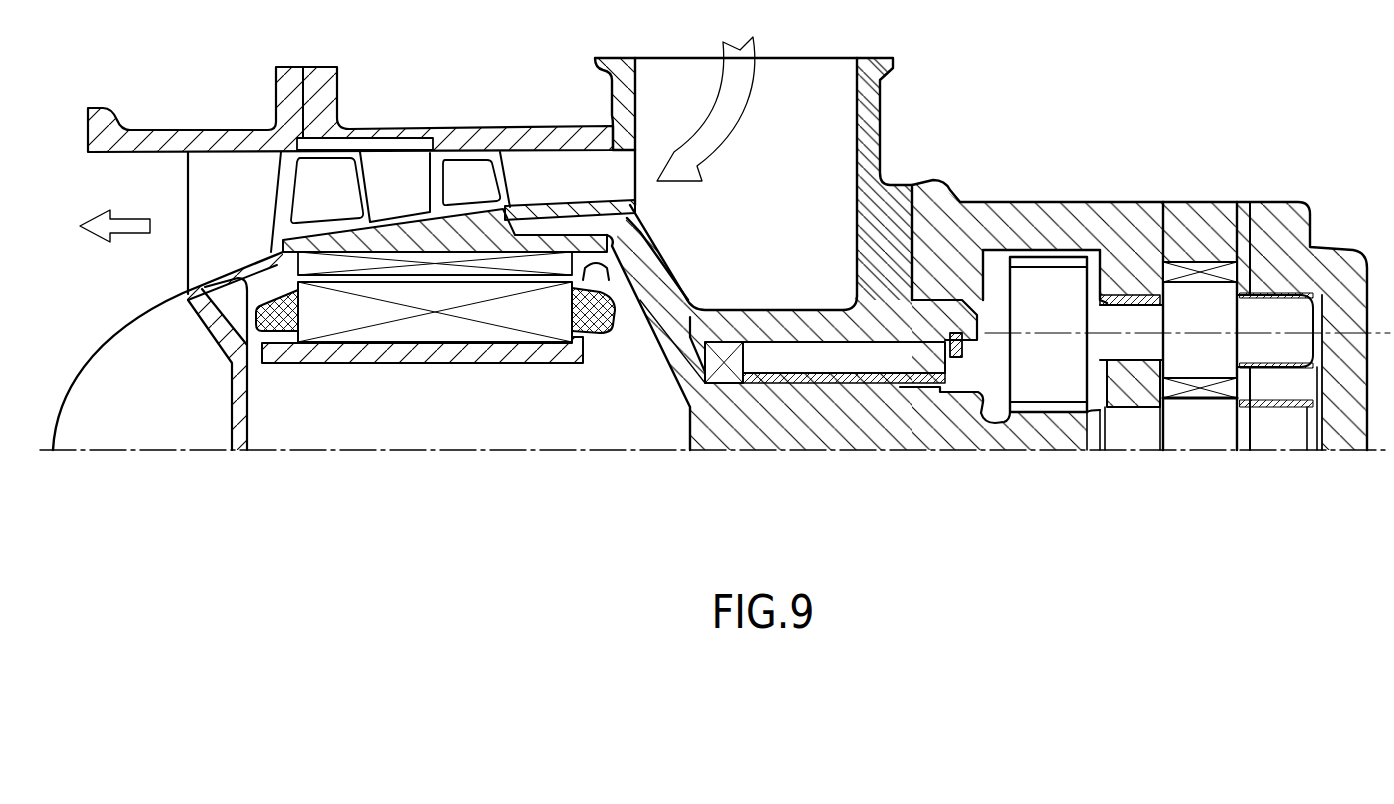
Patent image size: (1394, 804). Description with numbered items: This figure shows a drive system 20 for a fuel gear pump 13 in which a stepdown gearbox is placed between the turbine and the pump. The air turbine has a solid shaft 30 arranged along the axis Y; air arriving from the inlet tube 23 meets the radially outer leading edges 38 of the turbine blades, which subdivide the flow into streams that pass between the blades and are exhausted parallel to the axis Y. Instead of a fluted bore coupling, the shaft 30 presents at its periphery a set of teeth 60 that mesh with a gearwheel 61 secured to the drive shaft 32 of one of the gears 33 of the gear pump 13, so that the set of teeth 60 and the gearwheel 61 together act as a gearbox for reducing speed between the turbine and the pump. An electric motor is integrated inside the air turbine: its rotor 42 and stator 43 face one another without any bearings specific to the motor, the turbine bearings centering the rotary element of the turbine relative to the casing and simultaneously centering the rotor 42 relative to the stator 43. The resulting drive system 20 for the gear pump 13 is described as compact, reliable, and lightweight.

The gear pump 13 is at (1278, 281).
The drive system 20 is at (352, 412).
The inlet tube 23 is at (800, 78).
The shaft 30 is at (822, 430).
The drive shaft 32 is at (1125, 320).
The gearwheel 33 is at (1197, 300).
The leading edges 38 is at (636, 157).
The rotor 42 is at (328, 256).
The stator 43 is at (452, 330).
The set of teeth 60 is at (1046, 435).
The gearwheel 61 is at (1045, 290).
The axis Y is at (126, 458).